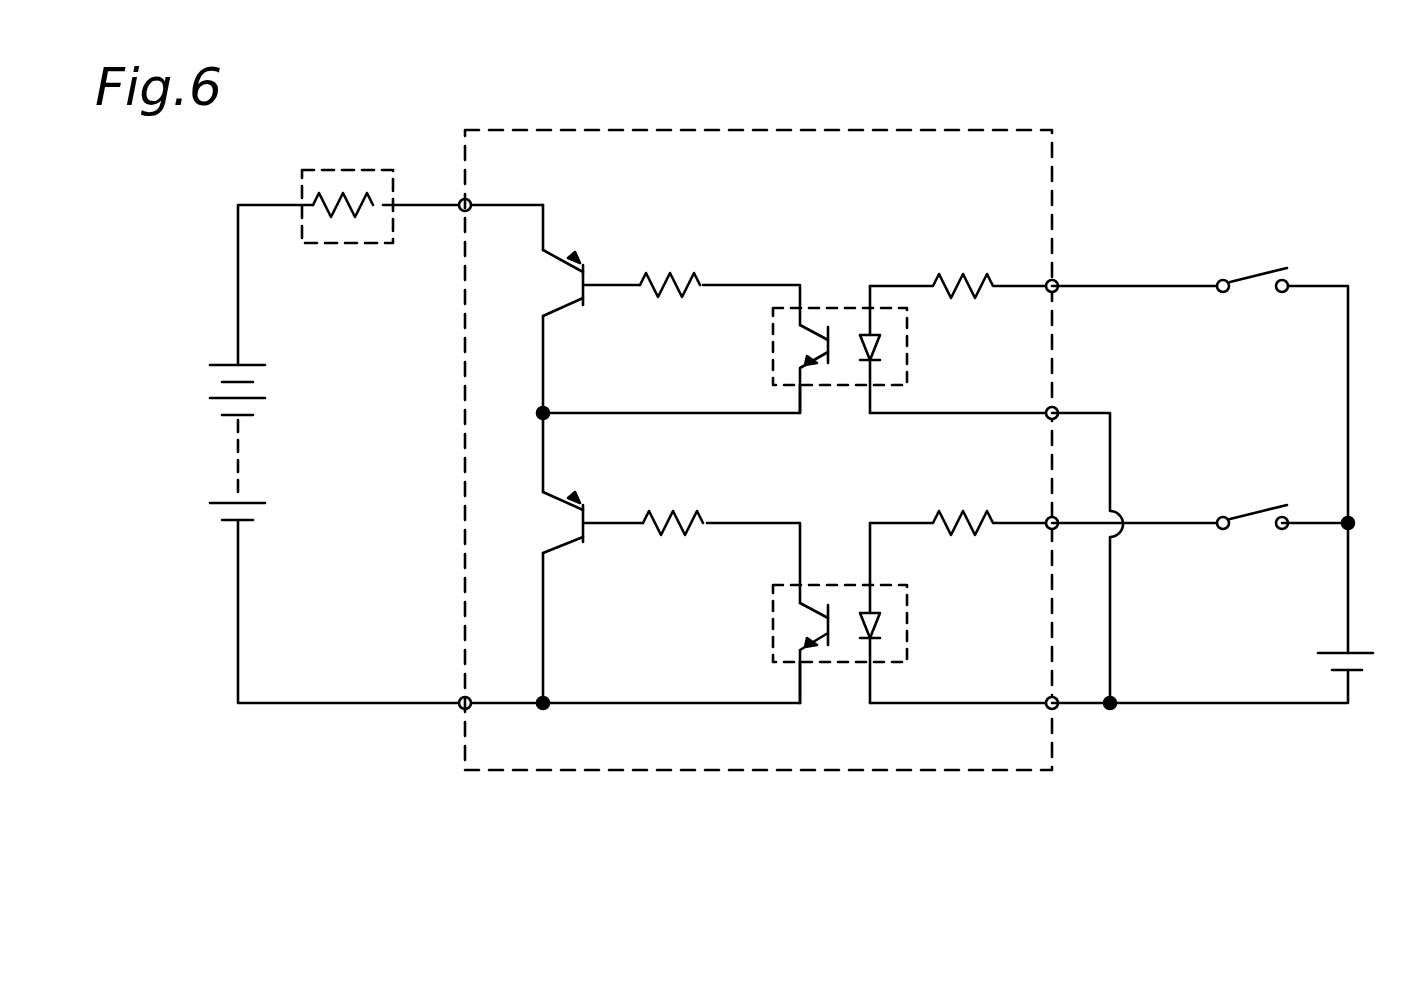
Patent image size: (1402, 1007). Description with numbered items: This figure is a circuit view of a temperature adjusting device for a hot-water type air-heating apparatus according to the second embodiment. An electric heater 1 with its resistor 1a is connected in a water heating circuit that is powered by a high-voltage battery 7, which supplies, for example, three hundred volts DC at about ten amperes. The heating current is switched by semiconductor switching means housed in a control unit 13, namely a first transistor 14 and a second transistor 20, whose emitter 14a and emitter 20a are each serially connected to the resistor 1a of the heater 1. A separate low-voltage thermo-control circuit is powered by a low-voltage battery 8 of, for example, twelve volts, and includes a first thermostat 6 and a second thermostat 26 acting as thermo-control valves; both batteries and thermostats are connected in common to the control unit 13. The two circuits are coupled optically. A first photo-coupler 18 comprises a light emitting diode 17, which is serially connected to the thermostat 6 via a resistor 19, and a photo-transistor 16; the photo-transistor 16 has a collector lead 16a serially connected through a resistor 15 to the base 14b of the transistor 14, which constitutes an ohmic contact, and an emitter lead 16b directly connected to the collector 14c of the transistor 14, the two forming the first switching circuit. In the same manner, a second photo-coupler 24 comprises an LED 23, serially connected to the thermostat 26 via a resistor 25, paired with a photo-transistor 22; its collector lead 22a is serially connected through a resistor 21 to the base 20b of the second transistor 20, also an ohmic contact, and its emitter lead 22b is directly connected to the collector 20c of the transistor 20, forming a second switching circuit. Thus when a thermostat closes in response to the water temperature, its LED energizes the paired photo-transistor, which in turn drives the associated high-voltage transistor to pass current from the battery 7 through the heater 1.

The electric heater 1 is at (347, 211).
The resistor 1a is at (353, 235).
The thermostat 6 is at (1262, 530).
The high-voltage battery 7 is at (210, 465).
The low-voltage battery 8 is at (1350, 651).
The control unit 13 is at (740, 128).
The transistor 14 is at (565, 574).
The emitter 14a is at (574, 502).
The base 14b is at (614, 527).
The collector 14c is at (565, 548).
The resistor 15 is at (688, 530).
The photo-transistor 16 is at (790, 631).
The collector lead 16a is at (828, 602).
The emitter lead 16b is at (827, 653).
The light emitting diode 17 is at (885, 624).
The photo-coupler 18 is at (840, 602).
The resistor 19 is at (956, 518).
The second transistor 20 is at (575, 348).
The emitter 20a is at (568, 262).
The base 20b is at (624, 287).
The collector 20c is at (565, 310).
The resistor 21 is at (700, 276).
The photo-transistor 22 is at (784, 352).
The collector lead 22a is at (820, 320).
The emitter lead 22b is at (822, 376).
The LED 23 is at (880, 348).
The second photo-coupler 24 is at (844, 332).
The resistor 25 is at (956, 280).
The second thermostat 26 is at (1265, 270).